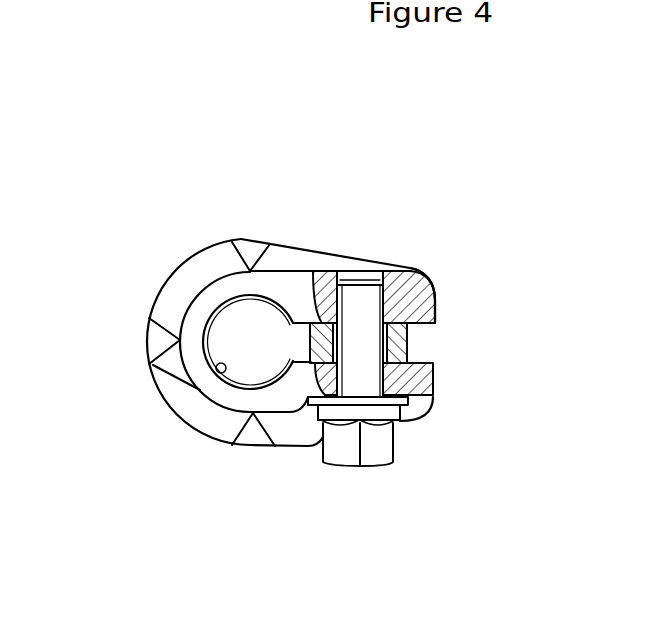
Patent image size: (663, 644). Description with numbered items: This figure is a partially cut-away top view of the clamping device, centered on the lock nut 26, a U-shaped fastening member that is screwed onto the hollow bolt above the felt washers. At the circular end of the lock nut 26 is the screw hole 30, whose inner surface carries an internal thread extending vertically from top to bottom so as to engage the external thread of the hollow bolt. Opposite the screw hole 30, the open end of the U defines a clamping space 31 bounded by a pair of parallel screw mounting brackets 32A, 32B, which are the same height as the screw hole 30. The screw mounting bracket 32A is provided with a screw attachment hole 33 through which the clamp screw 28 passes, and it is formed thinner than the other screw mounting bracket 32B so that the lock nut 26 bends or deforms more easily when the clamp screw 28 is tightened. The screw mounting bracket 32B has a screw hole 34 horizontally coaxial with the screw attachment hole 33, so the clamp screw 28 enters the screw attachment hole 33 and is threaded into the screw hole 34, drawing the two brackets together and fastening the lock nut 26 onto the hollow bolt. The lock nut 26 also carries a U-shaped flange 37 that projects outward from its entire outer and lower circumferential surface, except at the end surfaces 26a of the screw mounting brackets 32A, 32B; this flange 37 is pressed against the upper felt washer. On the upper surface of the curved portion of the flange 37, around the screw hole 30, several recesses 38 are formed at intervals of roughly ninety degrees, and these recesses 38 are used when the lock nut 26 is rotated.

The lock nut 26 is at (428, 232).
The end surfaces 26a is at (437, 308).
The clamp screw 28 is at (383, 458).
The screw hole 30 is at (222, 370).
The clamping space 31 is at (423, 328).
The screw mounting bracket 32A is at (425, 383).
The screw mounting bracket 32B is at (417, 278).
The screw attachment hole 33 is at (344, 397).
The screw hole 34 is at (368, 270).
The flange 37 is at (167, 277).
The recesses 38 is at (262, 242).